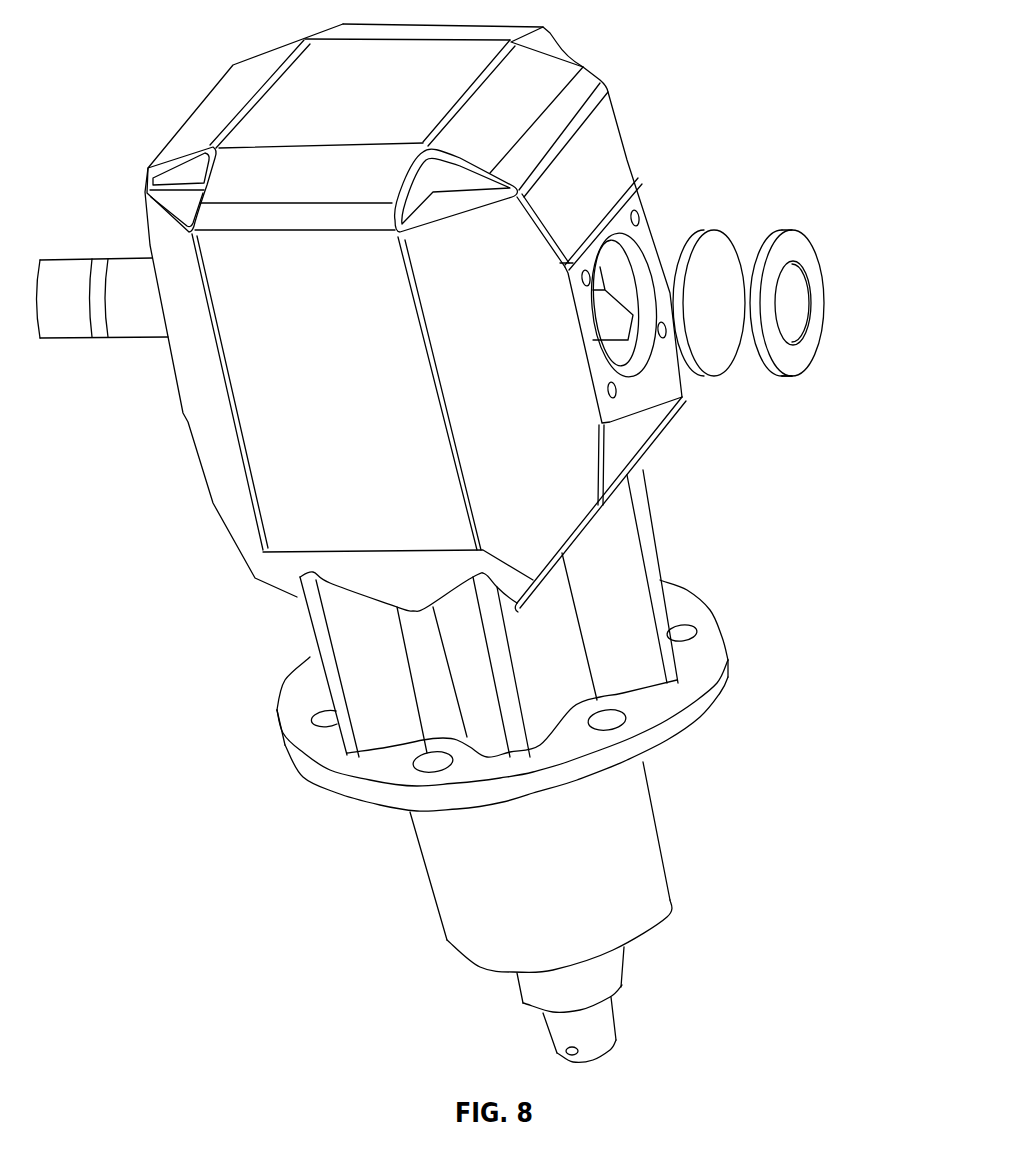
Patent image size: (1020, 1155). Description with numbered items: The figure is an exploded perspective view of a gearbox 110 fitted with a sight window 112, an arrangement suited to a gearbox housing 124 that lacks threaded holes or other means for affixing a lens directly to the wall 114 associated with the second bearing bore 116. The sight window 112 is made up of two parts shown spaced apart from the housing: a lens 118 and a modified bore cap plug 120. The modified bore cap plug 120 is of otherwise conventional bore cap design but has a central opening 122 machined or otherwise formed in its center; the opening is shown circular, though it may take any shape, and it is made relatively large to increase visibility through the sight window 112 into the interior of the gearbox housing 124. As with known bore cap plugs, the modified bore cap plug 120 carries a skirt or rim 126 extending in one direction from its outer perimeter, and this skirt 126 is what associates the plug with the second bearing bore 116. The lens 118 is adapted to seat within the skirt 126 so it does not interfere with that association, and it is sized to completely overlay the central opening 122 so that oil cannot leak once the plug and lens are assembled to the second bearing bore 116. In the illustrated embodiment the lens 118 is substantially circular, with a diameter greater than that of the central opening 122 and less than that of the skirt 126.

The gearbox 110 is at (152, 72).
The sight window 112 is at (835, 308).
The wall 114 is at (617, 153).
The second bearing bore 116 is at (643, 362).
The lens 118 is at (714, 252).
The modified bore cap plug 120 is at (807, 373).
The central opening 122 is at (799, 266).
The gearbox housing 124 is at (216, 513).
The skirt or rim 126 is at (773, 370).